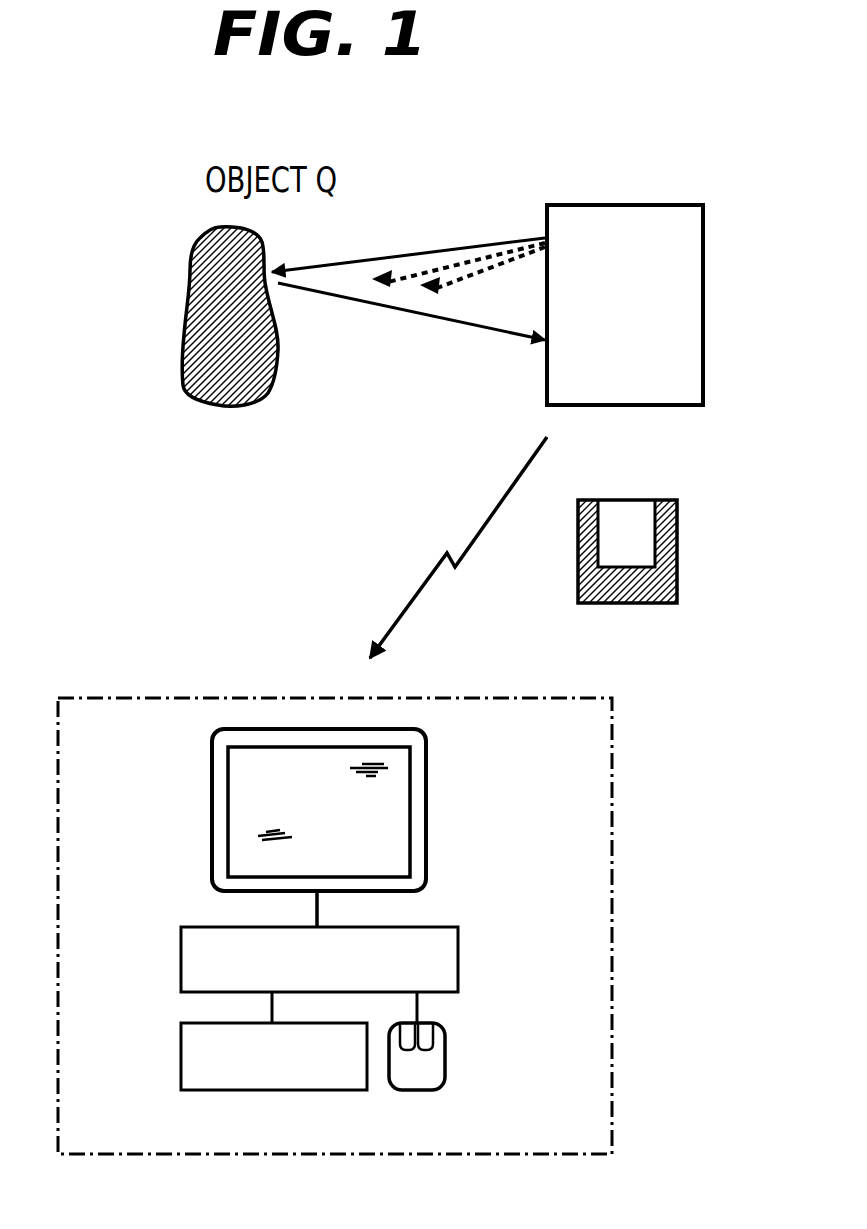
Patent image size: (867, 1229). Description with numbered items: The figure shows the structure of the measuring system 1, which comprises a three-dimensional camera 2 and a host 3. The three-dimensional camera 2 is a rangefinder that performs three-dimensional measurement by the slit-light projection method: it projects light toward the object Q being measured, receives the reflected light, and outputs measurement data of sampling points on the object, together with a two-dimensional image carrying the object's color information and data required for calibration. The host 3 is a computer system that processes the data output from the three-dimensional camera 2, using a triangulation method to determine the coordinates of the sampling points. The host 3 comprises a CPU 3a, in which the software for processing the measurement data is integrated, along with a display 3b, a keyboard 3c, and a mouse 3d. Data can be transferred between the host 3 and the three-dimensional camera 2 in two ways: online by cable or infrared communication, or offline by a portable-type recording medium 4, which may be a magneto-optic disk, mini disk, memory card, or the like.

The measuring system 1 is at (143, 561).
The three-dimensional camera 2 is at (608, 203).
The host 3 is at (180, 697).
The CPU 3a is at (458, 958).
The display 3b is at (428, 797).
The keyboard 3c is at (180, 1058).
The mouse 3d is at (445, 1058).
The portable-type recording medium 4 is at (677, 540).